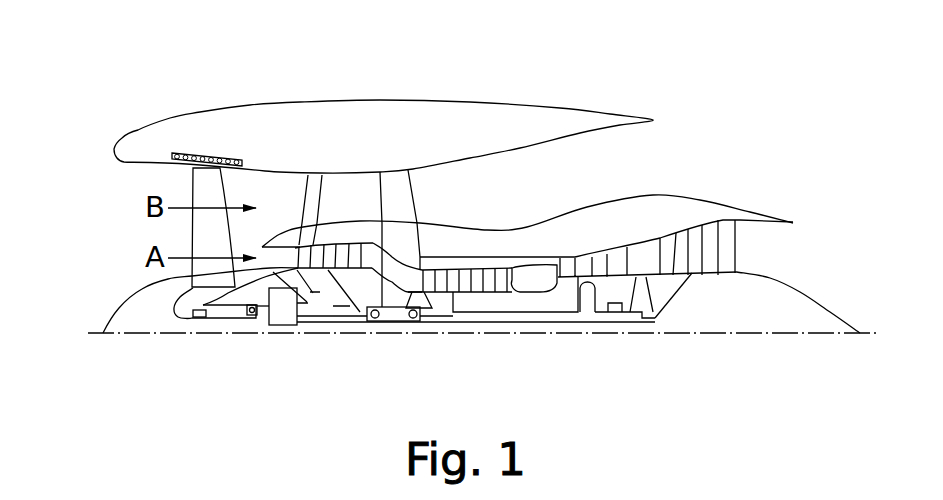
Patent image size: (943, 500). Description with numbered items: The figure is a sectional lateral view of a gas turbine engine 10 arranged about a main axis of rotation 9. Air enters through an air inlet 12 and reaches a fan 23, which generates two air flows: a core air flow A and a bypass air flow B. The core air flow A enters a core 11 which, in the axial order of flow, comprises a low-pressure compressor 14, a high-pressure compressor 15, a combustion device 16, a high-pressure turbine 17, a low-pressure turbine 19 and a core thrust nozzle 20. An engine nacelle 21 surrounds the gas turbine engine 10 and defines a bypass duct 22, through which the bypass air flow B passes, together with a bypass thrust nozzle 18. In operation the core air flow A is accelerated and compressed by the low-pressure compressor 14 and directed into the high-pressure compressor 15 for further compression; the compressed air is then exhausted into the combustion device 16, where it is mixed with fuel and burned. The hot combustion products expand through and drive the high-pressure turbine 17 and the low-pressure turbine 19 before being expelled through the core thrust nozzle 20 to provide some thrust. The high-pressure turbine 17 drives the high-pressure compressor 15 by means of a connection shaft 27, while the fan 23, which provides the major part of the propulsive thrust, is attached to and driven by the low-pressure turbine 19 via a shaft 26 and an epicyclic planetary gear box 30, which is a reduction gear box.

The main axis of rotation 9 is at (763, 333).
The gas turbine engine 10 is at (170, 118).
The core 11 is at (548, 252).
The air inlet 12 is at (128, 183).
The low-pressure compressor 14 is at (338, 248).
The high-pressure compressor 15 is at (472, 280).
The combustion device 16 is at (535, 280).
The high-pressure turbine 17 is at (593, 263).
The bypass thrust nozzle 18 is at (745, 115).
The low-pressure turbine 19 is at (715, 260).
The core thrust nozzle 20 is at (793, 260).
The engine nacelle 21 is at (393, 113).
The bypass duct 22 is at (629, 157).
The fan 23 is at (200, 242).
The shaft 26 is at (442, 324).
The connection shaft 27 is at (498, 312).
The epicyclic planetary gear box 30 is at (283, 313).